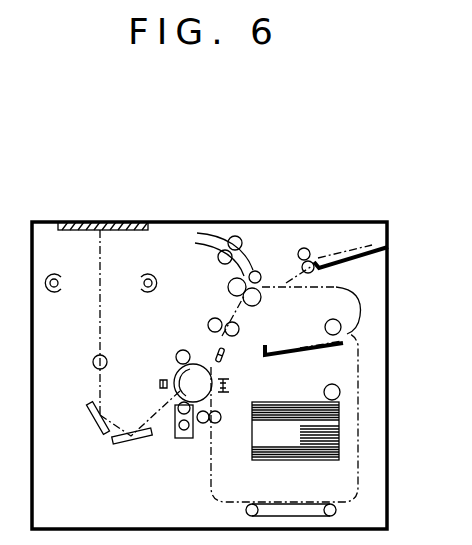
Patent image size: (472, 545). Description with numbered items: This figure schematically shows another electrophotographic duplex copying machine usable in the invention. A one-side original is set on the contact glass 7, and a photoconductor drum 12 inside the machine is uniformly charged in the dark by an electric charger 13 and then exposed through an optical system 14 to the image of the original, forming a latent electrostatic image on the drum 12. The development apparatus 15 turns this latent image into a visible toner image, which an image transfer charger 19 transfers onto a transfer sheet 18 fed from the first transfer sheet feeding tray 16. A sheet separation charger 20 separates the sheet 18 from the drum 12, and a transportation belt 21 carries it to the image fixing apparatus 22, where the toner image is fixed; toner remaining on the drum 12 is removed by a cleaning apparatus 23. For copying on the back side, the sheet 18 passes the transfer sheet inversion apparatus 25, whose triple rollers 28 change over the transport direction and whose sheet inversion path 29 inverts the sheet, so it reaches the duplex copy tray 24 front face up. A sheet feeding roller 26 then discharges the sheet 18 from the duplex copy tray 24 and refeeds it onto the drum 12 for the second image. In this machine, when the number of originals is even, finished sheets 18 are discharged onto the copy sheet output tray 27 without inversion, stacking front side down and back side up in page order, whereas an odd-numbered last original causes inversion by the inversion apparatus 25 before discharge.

The contact glass 7 is at (100, 221).
The photoconductor drum 12 is at (178, 391).
The electric charger 13 is at (160, 384).
The optical system 14 is at (94, 358).
The development apparatus 15 is at (187, 439).
The first transfer sheet feeding tray 16 is at (316, 452).
The transfer sheet 18 is at (340, 398).
The image transfer charger 19 is at (226, 419).
The sheet separation charger 20 is at (230, 384).
The transportation belt 21 is at (226, 353).
The image fixing apparatus 22 is at (211, 318).
The cleaning apparatus 23 is at (178, 349).
The duplex copy tray 24 is at (311, 350).
The transfer sheet inversion apparatus 25 is at (252, 268).
The sheet feeding roller 26 is at (325, 326).
The copy sheet output tray 27 is at (371, 243).
The triple rollers 28 is at (270, 285).
The sheet inversion path 29 is at (214, 240).